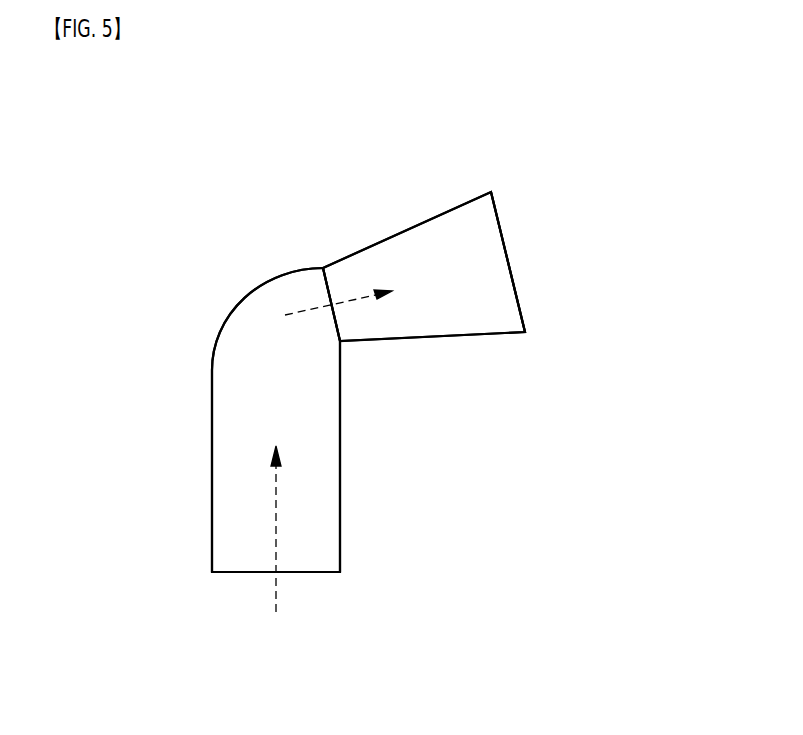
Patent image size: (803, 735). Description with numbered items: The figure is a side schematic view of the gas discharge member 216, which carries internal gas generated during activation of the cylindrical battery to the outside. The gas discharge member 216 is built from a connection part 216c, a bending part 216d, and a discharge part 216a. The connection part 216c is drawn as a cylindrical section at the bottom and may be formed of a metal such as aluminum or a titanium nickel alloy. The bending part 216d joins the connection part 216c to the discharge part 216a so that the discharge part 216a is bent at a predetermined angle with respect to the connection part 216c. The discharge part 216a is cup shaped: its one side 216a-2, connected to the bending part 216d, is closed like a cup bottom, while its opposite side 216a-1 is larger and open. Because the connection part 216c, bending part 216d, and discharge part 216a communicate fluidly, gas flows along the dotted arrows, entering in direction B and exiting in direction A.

The gas discharge member 216 is at (237, 253).
The discharge part 216a is at (483, 212).
The opposite side of the discharge part 216a-1 is at (523, 307).
The one side of the discharge part 216a-2 is at (336, 323).
The connection part 216c is at (325, 542).
The bending part 216d is at (277, 273).
The air outflow direction A is at (537, 255).
The air inflow direction B is at (177, 343).